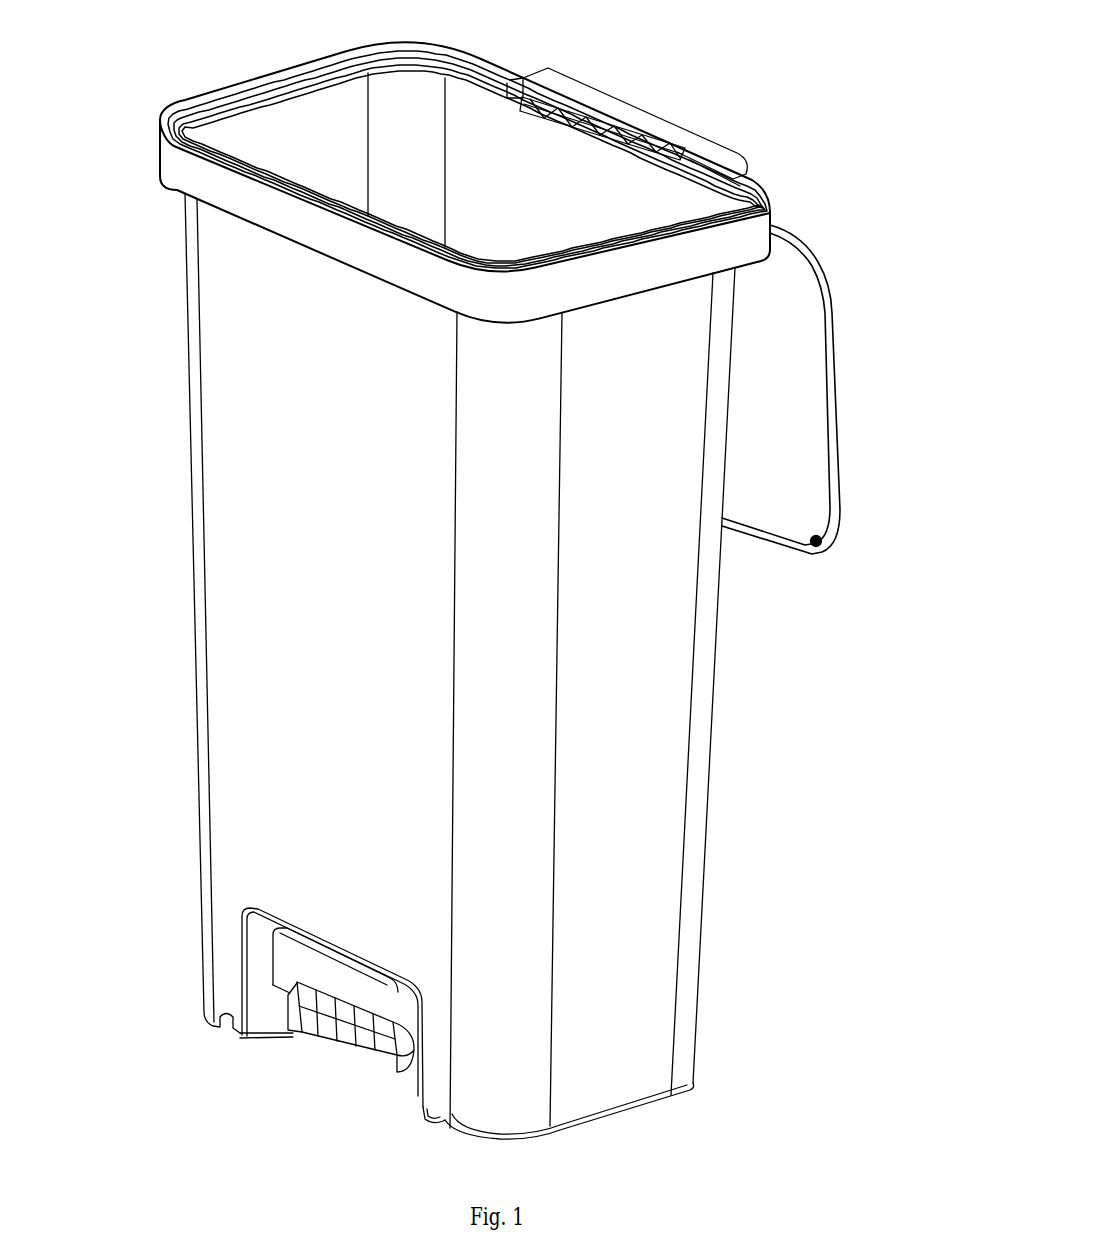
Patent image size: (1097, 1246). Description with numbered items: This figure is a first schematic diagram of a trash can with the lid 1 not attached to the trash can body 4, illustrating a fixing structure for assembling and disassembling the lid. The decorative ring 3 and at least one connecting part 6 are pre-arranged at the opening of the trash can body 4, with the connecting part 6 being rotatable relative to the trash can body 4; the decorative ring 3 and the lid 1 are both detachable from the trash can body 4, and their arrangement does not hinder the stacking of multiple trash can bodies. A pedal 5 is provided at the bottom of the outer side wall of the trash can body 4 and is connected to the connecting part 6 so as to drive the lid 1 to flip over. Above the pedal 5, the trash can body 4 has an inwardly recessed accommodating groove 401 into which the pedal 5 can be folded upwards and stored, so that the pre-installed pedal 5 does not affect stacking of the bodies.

The lid 1 is at (788, 437).
The decorative ring 3 is at (200, 180).
The trash can body 4 is at (252, 555).
The accommodating groove 401 is at (252, 965).
The pedal 5 is at (287, 1030).
The connecting part 6 is at (630, 122).